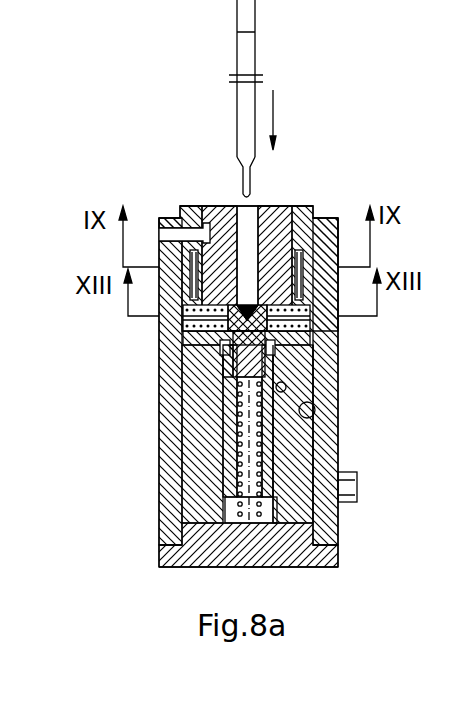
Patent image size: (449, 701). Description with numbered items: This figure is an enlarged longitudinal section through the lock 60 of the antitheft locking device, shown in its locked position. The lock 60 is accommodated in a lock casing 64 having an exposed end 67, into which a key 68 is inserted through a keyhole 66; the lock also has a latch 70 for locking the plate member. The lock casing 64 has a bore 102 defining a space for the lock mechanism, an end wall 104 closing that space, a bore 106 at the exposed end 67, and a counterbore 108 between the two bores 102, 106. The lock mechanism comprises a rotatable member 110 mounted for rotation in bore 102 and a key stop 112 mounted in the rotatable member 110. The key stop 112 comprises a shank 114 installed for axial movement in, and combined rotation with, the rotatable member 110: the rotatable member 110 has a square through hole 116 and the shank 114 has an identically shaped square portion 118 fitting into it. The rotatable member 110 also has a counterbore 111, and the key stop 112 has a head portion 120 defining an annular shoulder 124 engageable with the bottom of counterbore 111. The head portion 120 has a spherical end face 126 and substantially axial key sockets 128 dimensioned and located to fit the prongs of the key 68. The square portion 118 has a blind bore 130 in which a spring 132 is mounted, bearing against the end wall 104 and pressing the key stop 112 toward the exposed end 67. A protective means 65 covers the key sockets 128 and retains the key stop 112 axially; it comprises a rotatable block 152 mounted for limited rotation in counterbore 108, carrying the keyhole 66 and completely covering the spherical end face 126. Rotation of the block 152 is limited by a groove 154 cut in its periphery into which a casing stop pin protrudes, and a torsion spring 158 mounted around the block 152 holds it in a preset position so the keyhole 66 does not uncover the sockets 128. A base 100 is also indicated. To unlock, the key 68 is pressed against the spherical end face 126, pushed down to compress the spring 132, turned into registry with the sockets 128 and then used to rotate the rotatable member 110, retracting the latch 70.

The lock 60 is at (158, 522).
The lock casing 64 is at (205, 447).
The protective means 65 is at (210, 203).
The keyhole 66 is at (252, 222).
The exposed end 67 is at (240, 163).
The key 68 is at (247, 62).
The latch 70 is at (341, 494).
The base 100 is at (304, 580).
The bore 102 is at (338, 424).
The end wall 104 is at (185, 568).
The bore 106 is at (300, 205).
The counterbore 108 is at (312, 314).
The rotatable member 110 is at (205, 470).
The counterbore 111 is at (338, 398).
The key stop 112 is at (230, 380).
The shank 114 is at (315, 440).
The through hole 116 is at (312, 518).
The square portion 118 is at (357, 472).
The head portion 120 is at (313, 372).
The annular shoulder 124 is at (220, 372).
The spherical end face 126 is at (313, 331).
The key sockets 128 is at (215, 348).
The blind bore 130 is at (238, 430).
The spring 132 is at (240, 512).
The rotatable block 152 is at (180, 228).
The groove 154 is at (192, 206).
The torsion spring 158 is at (190, 300).